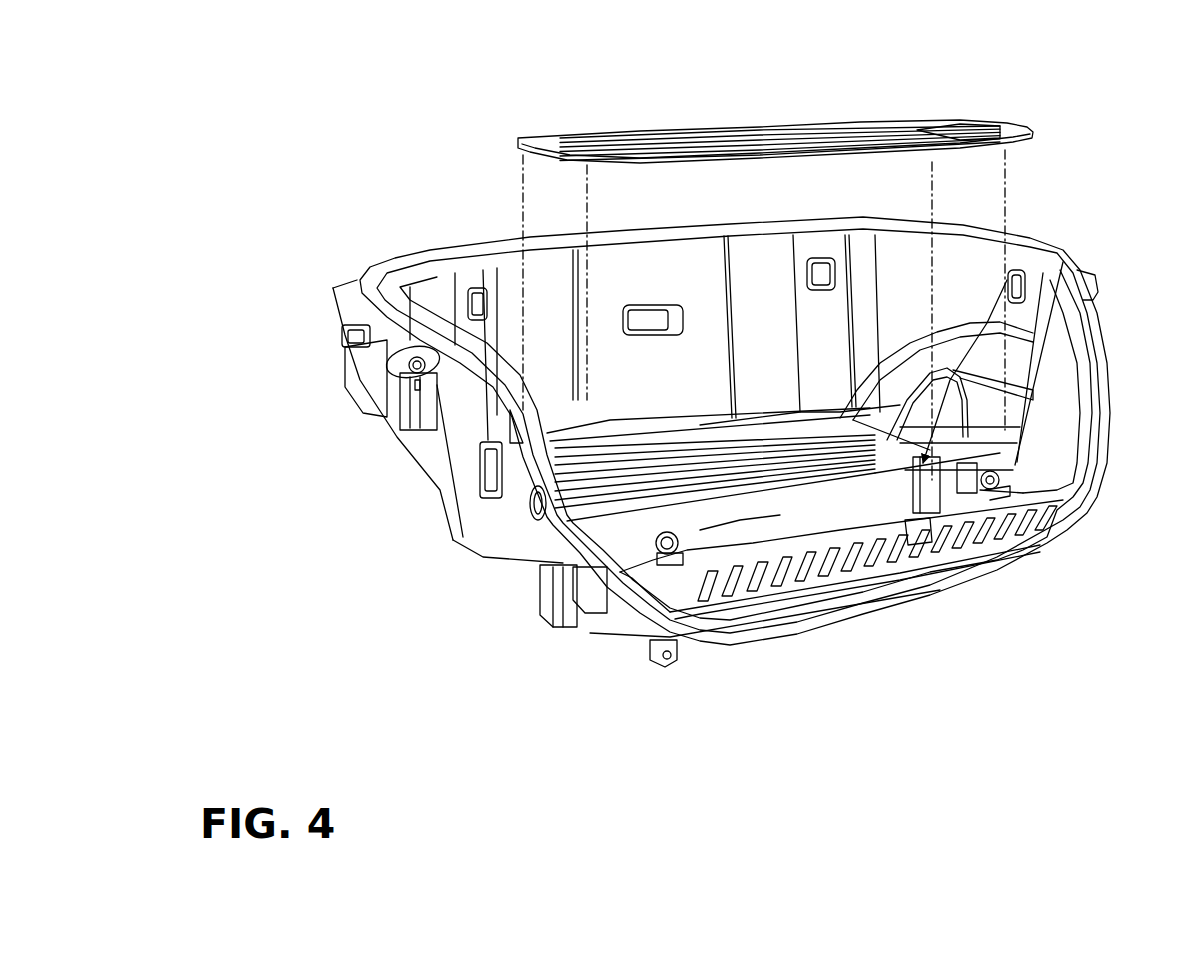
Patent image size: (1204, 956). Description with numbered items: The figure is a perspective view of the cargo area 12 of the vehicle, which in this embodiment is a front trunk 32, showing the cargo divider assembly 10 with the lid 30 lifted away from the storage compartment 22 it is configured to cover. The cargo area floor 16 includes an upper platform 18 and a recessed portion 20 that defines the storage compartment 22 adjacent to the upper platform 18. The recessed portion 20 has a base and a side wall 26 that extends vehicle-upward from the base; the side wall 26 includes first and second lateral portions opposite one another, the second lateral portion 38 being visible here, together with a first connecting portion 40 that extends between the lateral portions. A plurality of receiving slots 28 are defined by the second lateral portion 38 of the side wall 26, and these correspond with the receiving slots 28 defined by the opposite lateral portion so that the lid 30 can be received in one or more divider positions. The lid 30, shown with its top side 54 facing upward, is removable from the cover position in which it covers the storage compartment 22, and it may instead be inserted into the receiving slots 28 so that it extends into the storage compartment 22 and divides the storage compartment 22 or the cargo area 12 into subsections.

The cargo divider assembly 10 is at (768, 369).
The cargo area 12 is at (768, 403).
The cargo area floor 16 is at (448, 460).
The upper platform 18 is at (426, 487).
The recessed portion 20 is at (829, 336).
The storage compartment 22 is at (755, 613).
The side wall 26 is at (841, 597).
The receiving slots 28 is at (1058, 349).
The lid 30 is at (775, 95).
The front trunk 32 is at (732, 392).
The second lateral portion 38 is at (997, 565).
The first connecting portion 40 is at (940, 565).
The top side 54 is at (780, 109).